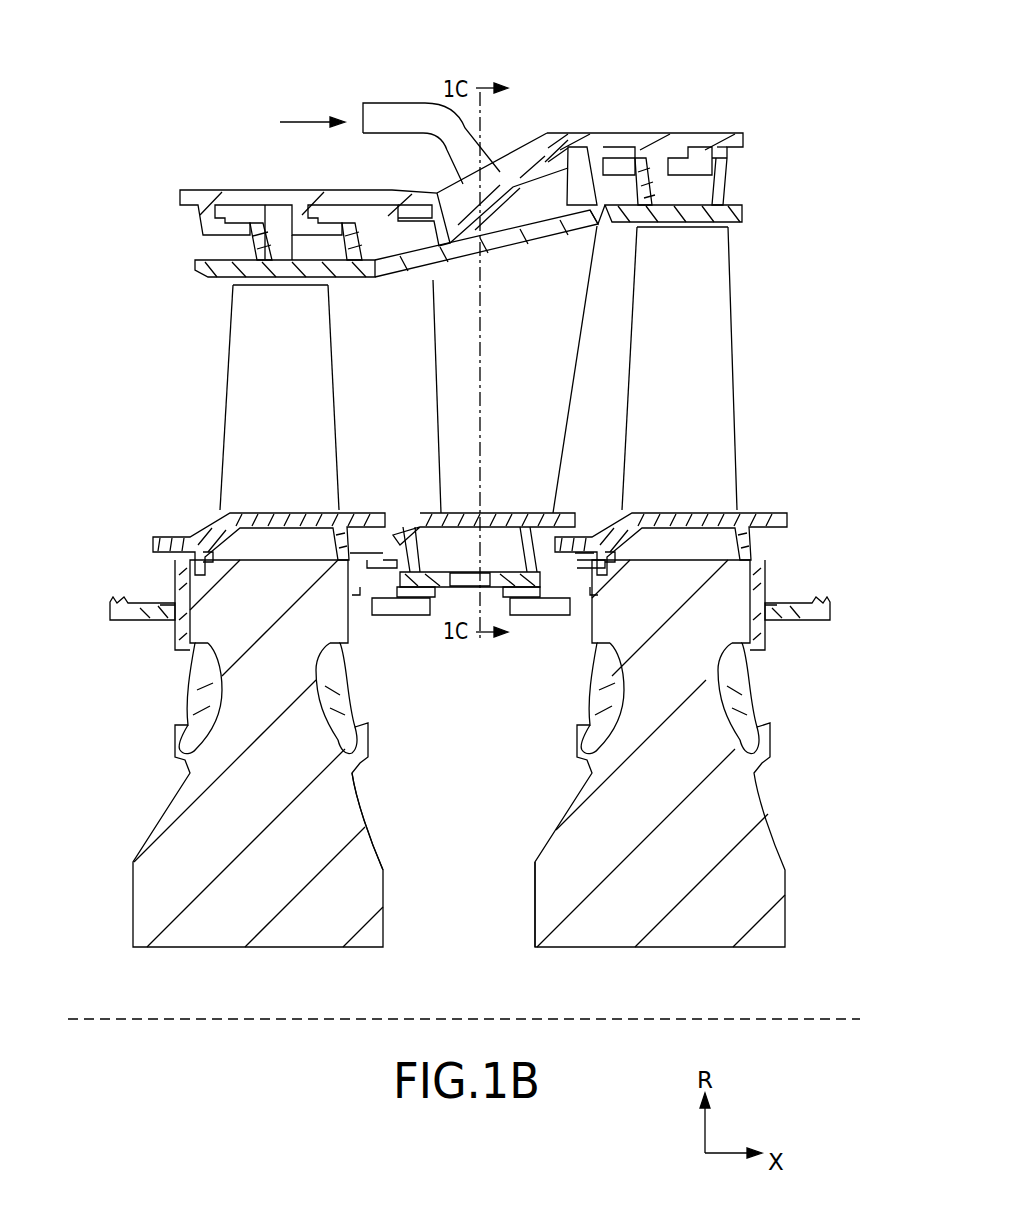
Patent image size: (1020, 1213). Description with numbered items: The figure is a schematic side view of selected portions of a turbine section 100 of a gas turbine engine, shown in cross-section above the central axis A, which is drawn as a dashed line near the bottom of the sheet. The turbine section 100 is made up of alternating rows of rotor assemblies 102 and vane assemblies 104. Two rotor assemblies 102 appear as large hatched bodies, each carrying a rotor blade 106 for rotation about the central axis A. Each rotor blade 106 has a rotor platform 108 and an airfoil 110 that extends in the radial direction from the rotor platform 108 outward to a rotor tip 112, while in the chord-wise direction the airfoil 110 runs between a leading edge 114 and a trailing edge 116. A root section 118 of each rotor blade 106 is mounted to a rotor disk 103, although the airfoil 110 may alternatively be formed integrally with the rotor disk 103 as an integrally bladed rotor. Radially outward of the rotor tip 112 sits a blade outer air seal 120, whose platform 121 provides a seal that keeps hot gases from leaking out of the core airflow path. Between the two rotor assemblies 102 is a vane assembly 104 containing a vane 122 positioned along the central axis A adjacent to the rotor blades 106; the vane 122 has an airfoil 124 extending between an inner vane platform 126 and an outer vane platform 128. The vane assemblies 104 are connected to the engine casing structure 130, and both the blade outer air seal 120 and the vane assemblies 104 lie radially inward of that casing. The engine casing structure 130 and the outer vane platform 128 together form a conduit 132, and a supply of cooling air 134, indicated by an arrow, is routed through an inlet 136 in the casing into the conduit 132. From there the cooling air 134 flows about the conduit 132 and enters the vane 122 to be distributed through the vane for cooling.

The turbine section 100 is at (186, 86).
The rotor assembly 102 is at (130, 882).
The rotor disk 103 is at (360, 815).
The vane assembly 104 is at (562, 383).
The rotor blade 106 is at (307, 416).
The rotor platform 108 is at (790, 522).
The airfoil 110 is at (738, 362).
The rotor tip 112 is at (232, 284).
The leading edge 114 is at (228, 337).
The trailing edge 116 is at (330, 330).
The root section 118 is at (212, 545).
The blade outer air seal 120 is at (750, 212).
The platform 121 is at (752, 218).
The vane 122 is at (526, 416).
The airfoil 124 is at (566, 405).
The inner vane platform 126 is at (556, 516).
The outer vane platform 128 is at (598, 216).
The engine casing structure 130 is at (753, 142).
The conduit 132 is at (504, 185).
The supply of cooling air 134 is at (300, 120).
The inlet 136 is at (381, 101).
The central axis A is at (797, 1022).